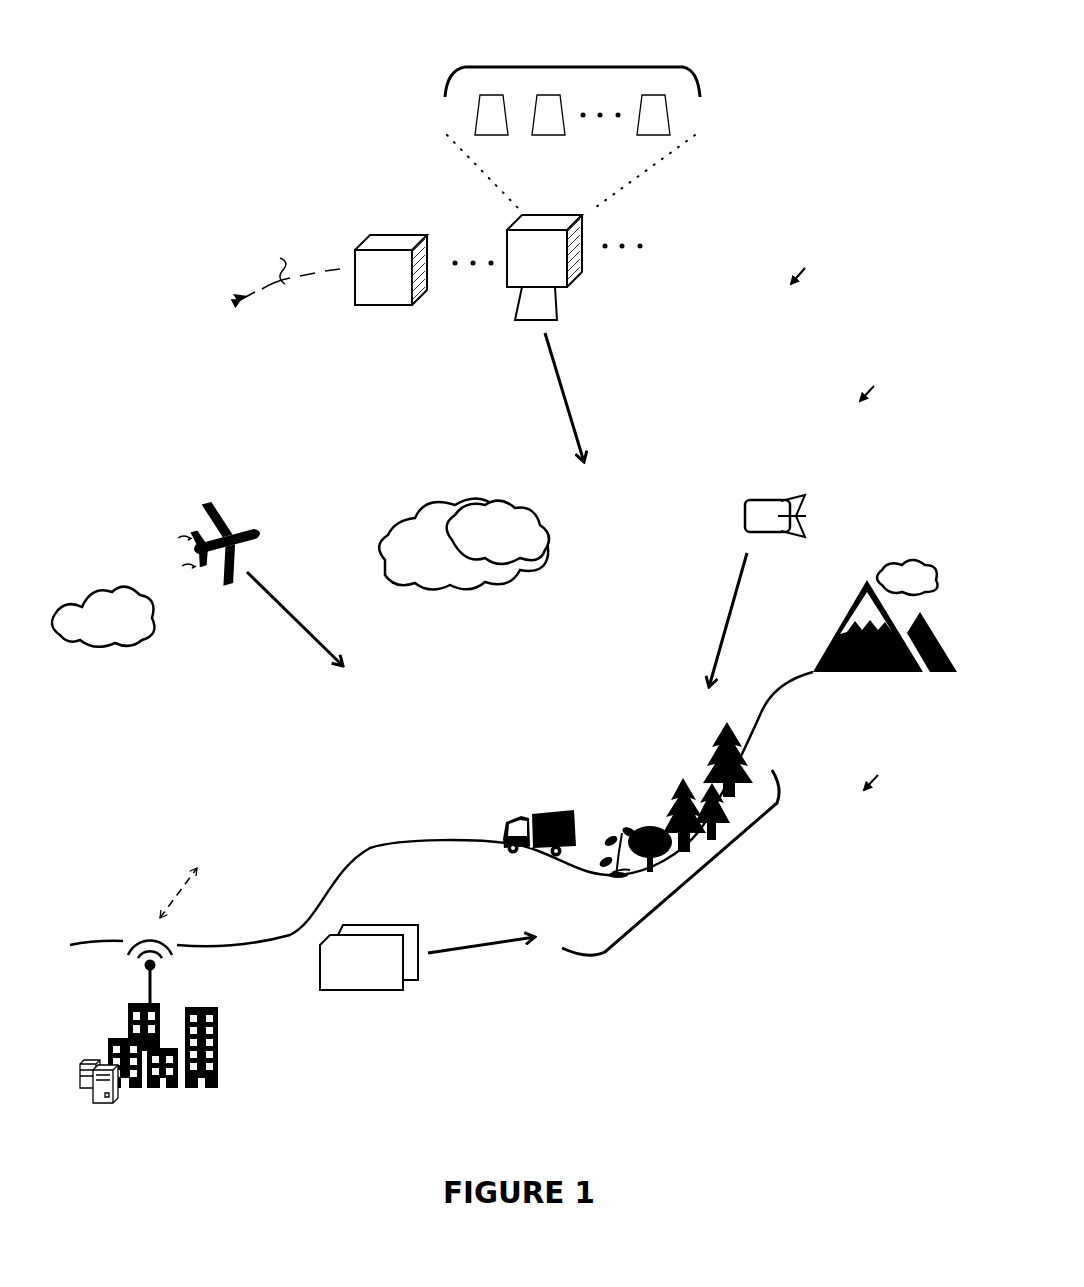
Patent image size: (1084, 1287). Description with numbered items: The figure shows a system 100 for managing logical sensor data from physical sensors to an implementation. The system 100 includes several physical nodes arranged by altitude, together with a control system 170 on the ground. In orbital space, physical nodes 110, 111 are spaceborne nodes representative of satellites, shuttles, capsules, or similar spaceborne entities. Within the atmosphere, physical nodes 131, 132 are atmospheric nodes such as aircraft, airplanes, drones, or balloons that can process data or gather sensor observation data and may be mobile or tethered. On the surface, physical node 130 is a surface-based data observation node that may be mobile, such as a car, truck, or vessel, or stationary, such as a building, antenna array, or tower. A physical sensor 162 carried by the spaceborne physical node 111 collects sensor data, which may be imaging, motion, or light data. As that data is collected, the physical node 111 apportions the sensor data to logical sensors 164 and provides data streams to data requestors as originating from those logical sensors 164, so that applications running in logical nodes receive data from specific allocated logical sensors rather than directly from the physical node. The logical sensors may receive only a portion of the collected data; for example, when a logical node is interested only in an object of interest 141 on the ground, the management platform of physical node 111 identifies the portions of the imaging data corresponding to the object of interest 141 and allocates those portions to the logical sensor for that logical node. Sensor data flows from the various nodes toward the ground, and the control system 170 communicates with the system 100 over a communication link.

The system 100 is at (90, 87).
The logical sensors 164 is at (572, 67).
The physical sensor 162 is at (509, 282).
The physical node 111 is at (544, 267).
The physical node 110 is at (391, 270).
The physical node 132 is at (241, 530).
The physical node 131 is at (761, 499).
The physical node 130 is at (369, 957).
The object of interest 141 is at (690, 910).
The control system 170 is at (100, 1104).